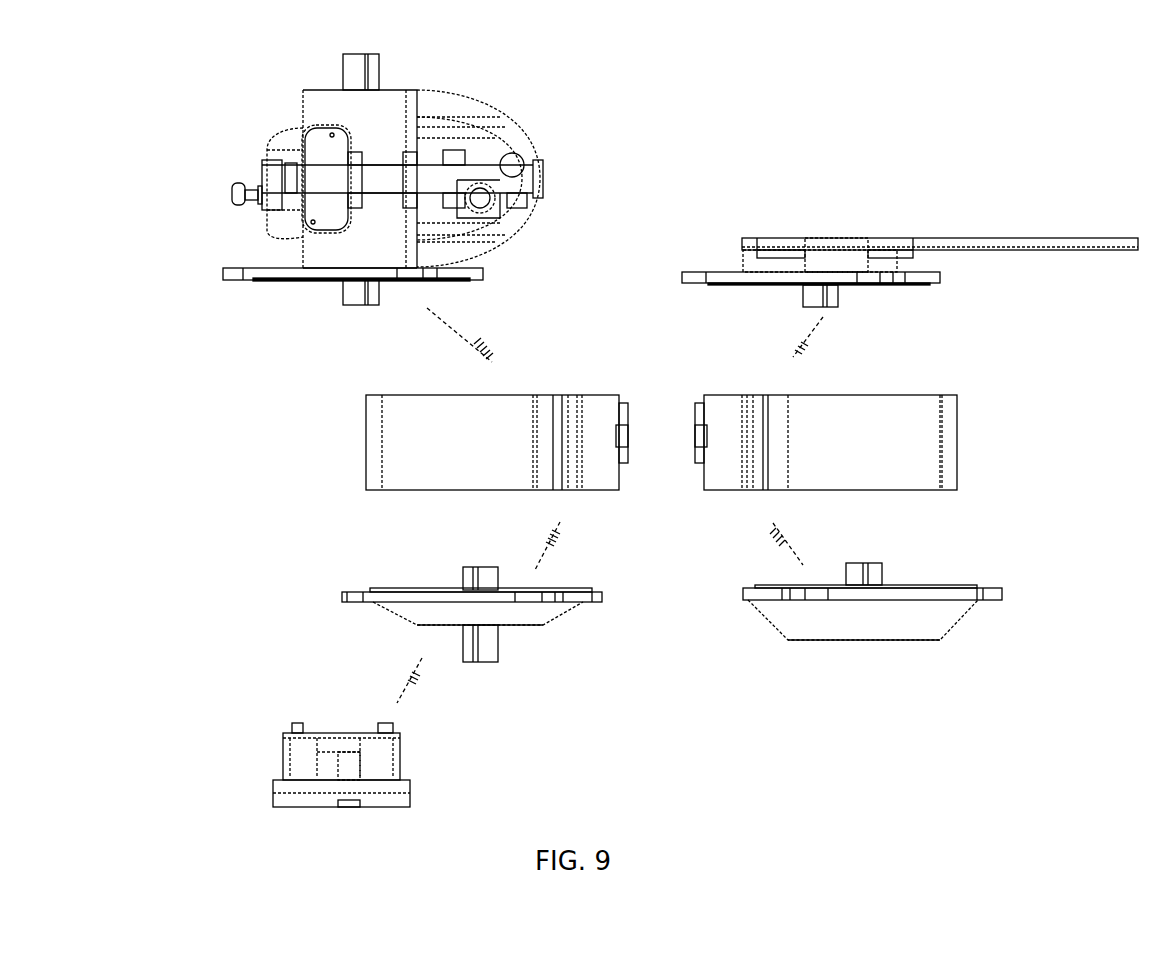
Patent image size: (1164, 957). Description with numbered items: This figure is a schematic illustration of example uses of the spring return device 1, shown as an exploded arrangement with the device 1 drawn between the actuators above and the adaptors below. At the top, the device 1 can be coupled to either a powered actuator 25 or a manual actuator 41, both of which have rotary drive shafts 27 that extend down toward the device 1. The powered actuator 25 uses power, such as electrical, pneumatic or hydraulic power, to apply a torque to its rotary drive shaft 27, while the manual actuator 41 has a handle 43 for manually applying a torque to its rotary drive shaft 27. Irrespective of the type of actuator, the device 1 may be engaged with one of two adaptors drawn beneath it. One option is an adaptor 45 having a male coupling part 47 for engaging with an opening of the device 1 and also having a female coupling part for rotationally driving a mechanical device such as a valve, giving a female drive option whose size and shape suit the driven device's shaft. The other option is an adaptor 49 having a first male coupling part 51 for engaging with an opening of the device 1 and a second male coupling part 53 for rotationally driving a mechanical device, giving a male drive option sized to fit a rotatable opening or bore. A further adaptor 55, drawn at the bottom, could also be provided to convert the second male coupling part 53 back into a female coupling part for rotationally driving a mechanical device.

The spring return device 1 is at (358, 440).
The powered actuator 25 is at (342, 107).
The rotary drive shaft 27 is at (342, 295).
The manual actuator 41 is at (823, 260).
The handle 43 is at (1023, 242).
The adaptor 45 is at (937, 617).
The male coupling part 47 is at (883, 563).
The adaptor 49 is at (390, 608).
The first male coupling part 51 is at (462, 572).
The second male coupling part 53 is at (497, 650).
The further adaptor 55 is at (373, 768).